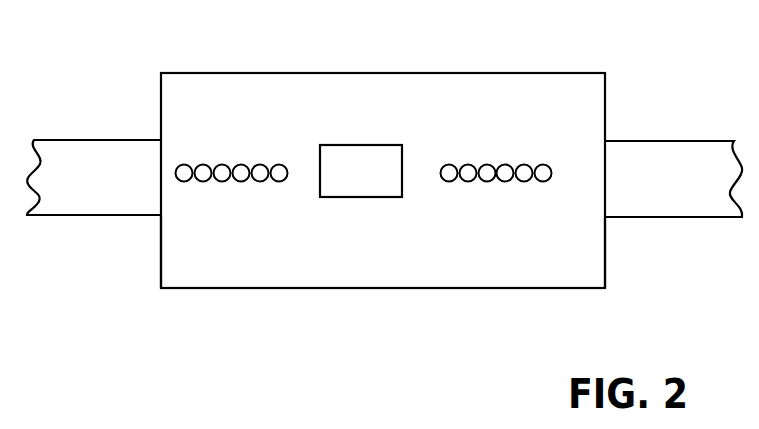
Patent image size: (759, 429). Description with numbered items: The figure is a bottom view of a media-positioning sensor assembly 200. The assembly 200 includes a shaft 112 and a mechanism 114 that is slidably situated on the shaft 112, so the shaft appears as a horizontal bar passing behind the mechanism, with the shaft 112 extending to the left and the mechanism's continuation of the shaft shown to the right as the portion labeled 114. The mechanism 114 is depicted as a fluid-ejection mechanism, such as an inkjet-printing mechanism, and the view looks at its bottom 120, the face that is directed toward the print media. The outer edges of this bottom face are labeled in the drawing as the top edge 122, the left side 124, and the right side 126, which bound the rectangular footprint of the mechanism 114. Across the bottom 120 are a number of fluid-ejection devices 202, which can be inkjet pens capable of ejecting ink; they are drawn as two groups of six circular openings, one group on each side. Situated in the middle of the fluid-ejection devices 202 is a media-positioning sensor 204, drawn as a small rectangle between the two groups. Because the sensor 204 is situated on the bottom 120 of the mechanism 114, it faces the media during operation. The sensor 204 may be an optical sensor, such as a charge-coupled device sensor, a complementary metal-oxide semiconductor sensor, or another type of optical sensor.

The shaft 112 is at (64, 198).
The mechanism 114 is at (594, 87).
The bottom 120 is at (227, 105).
The top edge of housing 122 is at (483, 73).
The left side of housing 124 is at (161, 261).
The right side of housing 126 is at (606, 261).
The sensor assembly 200 is at (269, 297).
The fluid-ejection devices 202 is at (290, 185).
The media-positioning sensor 204 is at (356, 153).